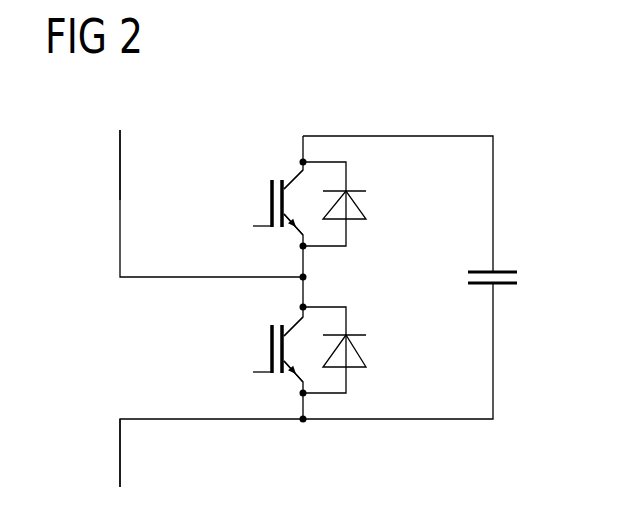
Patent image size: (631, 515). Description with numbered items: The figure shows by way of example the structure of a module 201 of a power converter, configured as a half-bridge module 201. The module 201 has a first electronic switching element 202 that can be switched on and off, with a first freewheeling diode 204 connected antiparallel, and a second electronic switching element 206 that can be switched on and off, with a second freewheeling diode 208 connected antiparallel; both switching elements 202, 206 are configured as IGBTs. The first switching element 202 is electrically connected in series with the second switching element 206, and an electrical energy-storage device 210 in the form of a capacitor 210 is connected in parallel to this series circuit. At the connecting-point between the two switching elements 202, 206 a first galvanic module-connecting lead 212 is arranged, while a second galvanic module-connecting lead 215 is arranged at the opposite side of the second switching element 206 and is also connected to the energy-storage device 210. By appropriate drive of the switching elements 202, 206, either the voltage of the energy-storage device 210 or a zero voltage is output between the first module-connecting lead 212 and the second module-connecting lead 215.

The module 201 is at (520, 112).
The first electronic switching element 202 is at (268, 204).
The first diode 204 is at (355, 200).
The second electronic switching element 206 is at (268, 351).
The second diode 208 is at (355, 345).
The energy-storage device 210 is at (505, 272).
The first module-connecting lead 212 is at (120, 195).
The second module-connecting lead 215 is at (120, 465).